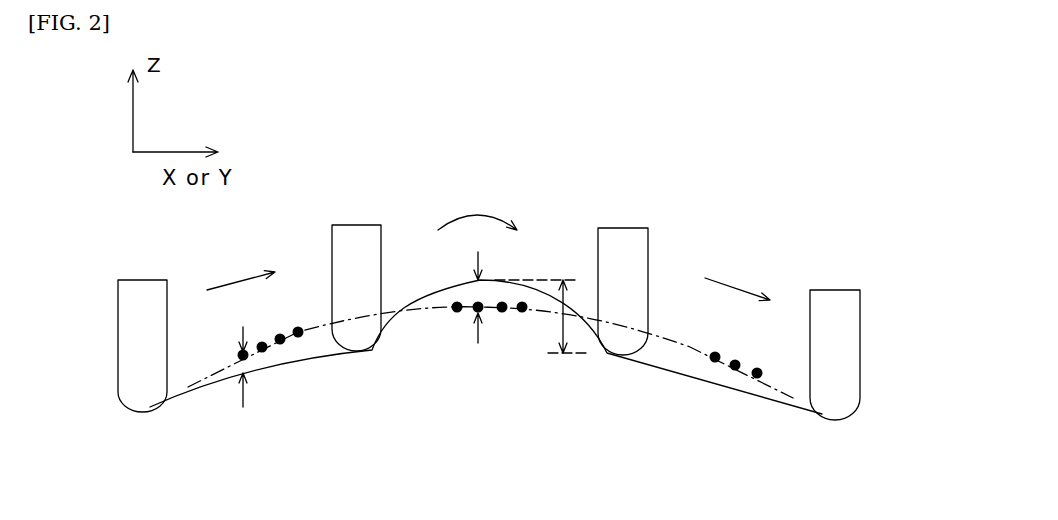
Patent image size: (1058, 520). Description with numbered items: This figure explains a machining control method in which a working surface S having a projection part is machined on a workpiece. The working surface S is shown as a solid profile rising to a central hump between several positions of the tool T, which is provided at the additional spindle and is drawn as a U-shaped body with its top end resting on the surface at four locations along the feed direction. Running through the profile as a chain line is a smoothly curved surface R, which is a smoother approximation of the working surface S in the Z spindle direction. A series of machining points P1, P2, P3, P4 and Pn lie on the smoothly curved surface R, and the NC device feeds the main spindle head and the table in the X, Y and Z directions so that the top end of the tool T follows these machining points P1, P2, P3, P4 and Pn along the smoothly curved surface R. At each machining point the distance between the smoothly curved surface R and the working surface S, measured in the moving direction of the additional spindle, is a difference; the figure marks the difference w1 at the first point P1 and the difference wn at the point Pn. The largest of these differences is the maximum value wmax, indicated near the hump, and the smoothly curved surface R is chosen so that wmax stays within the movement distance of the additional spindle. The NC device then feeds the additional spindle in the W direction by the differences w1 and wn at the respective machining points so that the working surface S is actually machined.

The tool T is at (158, 297).
The working surface S is at (727, 382).
The smoothly curved surface R is at (690, 347).
The machining point P1 is at (248, 358).
The machining point P2 is at (265, 350).
The machining point P3 is at (278, 337).
The machining point P4 is at (300, 332).
The machining point Pn is at (478, 305).
The difference w1 is at (240, 383).
The difference wn is at (476, 315).
The maximum value of differences wmax is at (555, 334).